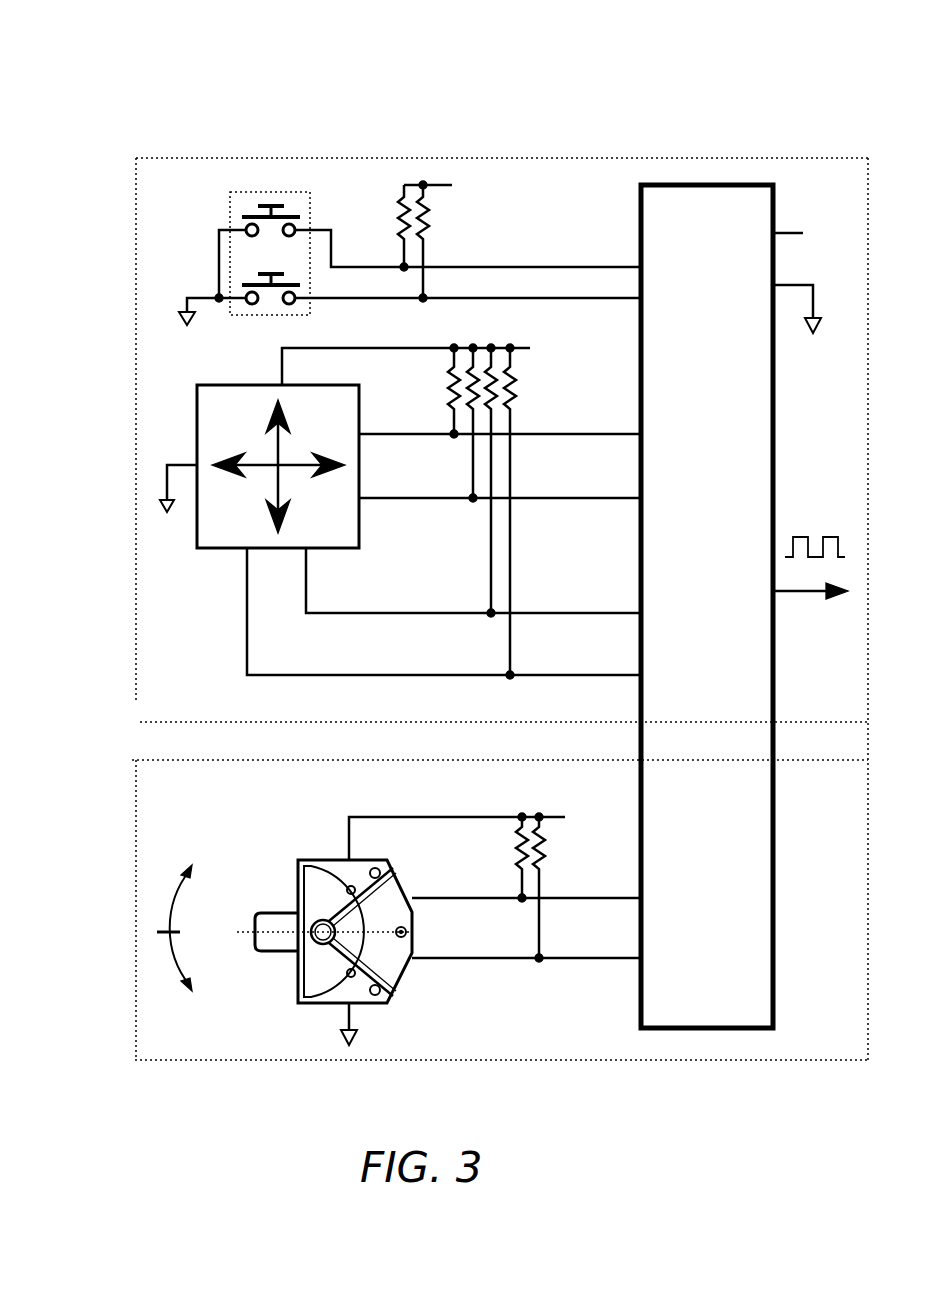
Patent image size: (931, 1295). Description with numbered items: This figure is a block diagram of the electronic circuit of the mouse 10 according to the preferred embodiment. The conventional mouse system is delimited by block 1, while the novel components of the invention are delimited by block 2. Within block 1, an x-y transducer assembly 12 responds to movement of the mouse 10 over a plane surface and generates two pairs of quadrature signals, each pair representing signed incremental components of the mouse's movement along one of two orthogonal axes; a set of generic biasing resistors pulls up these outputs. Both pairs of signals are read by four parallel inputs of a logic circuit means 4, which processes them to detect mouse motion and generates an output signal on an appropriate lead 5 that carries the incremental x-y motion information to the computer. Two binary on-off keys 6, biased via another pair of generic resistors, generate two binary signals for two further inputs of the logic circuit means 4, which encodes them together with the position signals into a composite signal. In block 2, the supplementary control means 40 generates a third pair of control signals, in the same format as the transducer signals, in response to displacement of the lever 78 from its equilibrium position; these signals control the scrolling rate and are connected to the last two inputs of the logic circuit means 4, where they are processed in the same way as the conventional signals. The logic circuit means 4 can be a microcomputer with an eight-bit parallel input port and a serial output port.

The mouse 10 is at (332, 120).
The block 1 is at (122, 643).
The block 2 is at (115, 1014).
The logic circuit means 4 is at (745, 606).
The lead 5 is at (810, 586).
The binary keys 6 is at (228, 208).
The x-y transducer assembly 12 is at (186, 416).
The supplementary control means 40 is at (237, 829).
The lever 78 is at (262, 950).